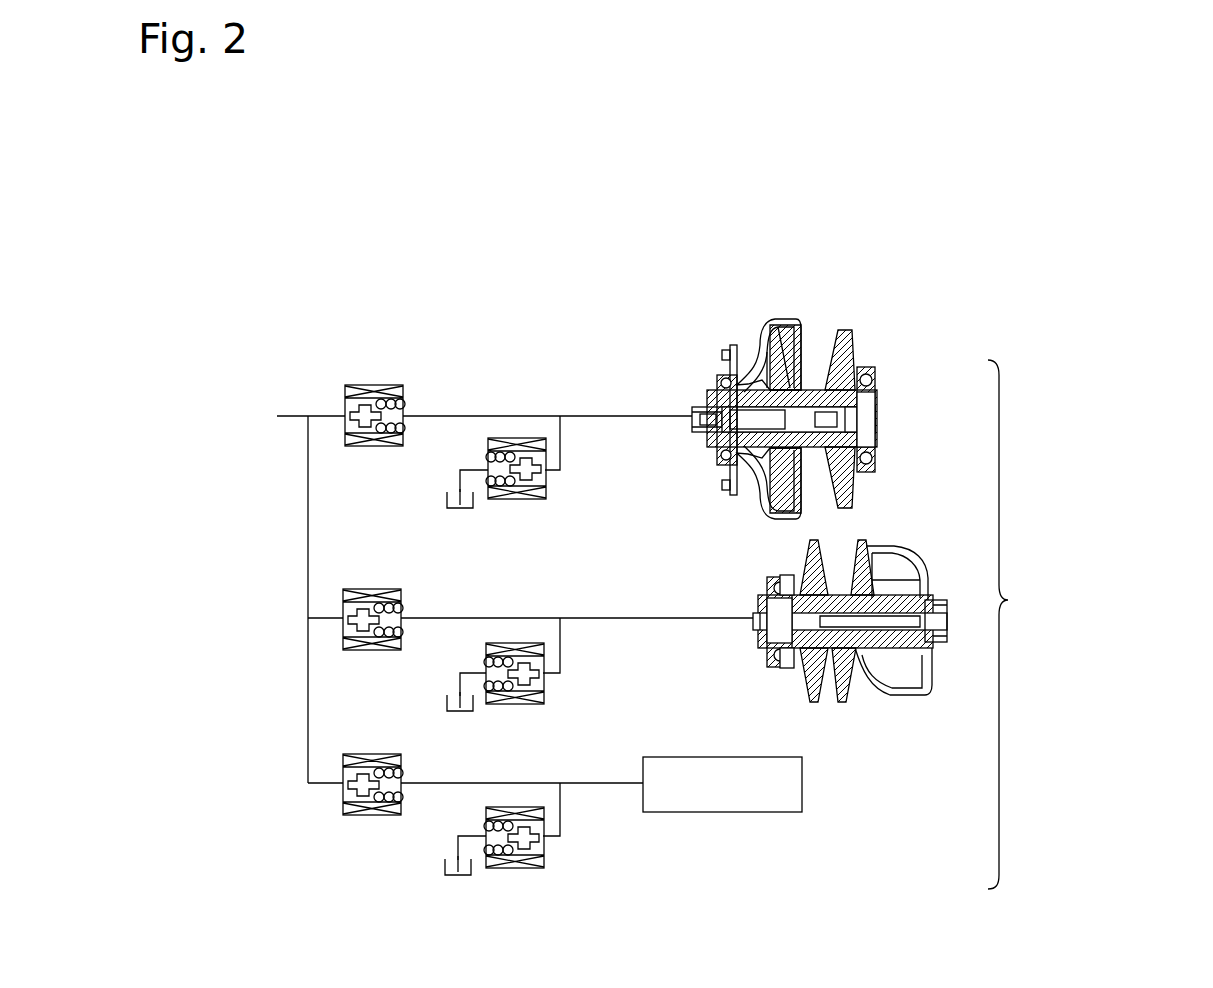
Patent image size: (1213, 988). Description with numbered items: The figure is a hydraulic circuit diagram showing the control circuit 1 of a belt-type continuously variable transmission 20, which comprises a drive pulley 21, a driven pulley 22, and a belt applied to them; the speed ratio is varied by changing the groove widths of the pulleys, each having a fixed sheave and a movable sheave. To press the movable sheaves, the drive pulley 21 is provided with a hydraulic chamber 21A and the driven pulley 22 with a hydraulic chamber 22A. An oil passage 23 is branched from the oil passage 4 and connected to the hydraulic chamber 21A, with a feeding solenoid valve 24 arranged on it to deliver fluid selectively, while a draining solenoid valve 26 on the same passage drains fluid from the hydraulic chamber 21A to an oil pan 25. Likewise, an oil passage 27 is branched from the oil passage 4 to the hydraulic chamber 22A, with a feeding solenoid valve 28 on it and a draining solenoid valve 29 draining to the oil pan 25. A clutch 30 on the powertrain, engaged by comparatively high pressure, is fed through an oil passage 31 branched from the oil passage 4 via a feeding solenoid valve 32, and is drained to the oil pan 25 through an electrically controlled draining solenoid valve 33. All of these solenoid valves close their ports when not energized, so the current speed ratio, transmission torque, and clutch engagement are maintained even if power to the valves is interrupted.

The control circuit 1 is at (1092, 624).
The oil passage 4 is at (277, 416).
The continuously variable transmission 20 is at (828, 332).
The drive pulley 21 is at (881, 348).
The hydraulic chamber 21A is at (765, 352).
The driven pulley 22 is at (867, 644).
The hydraulic chamber 22A is at (880, 580).
The oil passage 23 is at (598, 416).
The feeding solenoid valve 24 is at (403, 391).
The oil pan 25 is at (447, 498).
The draining solenoid valve 26 is at (545, 480).
The oil passage 27 is at (678, 618).
The feeding solenoid valve 28 is at (372, 589).
The draining solenoid valve 29 is at (545, 680).
The clutch 30 is at (802, 785).
The oil passage 31 is at (597, 783).
The feeding solenoid valve 32 is at (360, 815).
The draining solenoid valve 33 is at (545, 845).